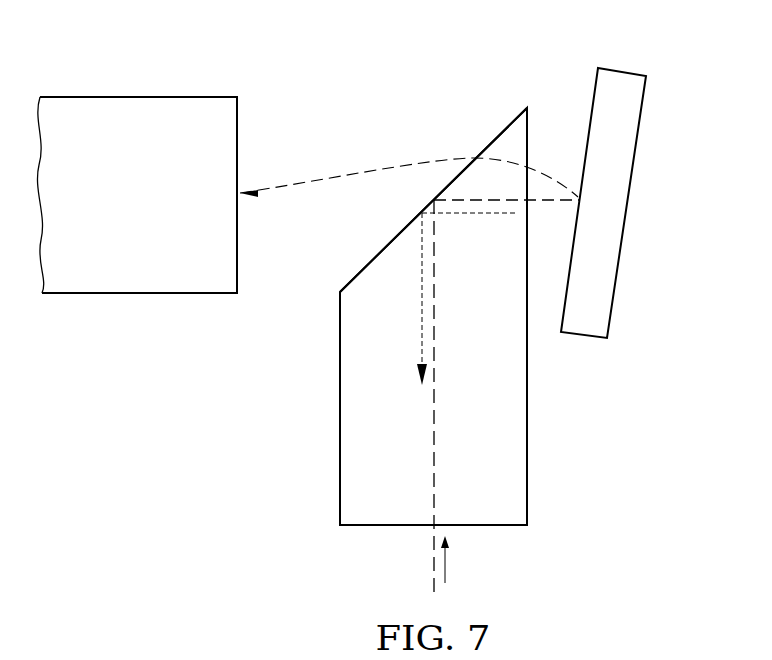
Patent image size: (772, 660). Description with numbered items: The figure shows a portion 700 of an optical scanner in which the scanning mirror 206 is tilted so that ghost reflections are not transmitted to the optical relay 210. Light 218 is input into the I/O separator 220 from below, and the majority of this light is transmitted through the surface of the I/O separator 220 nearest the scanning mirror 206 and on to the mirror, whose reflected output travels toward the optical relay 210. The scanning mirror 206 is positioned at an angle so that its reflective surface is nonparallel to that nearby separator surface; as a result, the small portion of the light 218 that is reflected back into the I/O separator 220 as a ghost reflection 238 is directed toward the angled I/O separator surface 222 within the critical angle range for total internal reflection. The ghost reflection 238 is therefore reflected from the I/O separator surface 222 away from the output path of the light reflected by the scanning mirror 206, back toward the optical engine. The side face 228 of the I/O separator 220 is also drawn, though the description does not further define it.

The portion of the optical scanner 700 is at (187, 71).
The optical relay 210 is at (116, 212).
The I/O separator 220 is at (341, 407).
The I/O separator surface 222 is at (494, 140).
The side surface of prism 228 is at (532, 437).
The scanning mirror 206 is at (632, 195).
The light 218 is at (433, 562).
The ghost reflection 238 is at (423, 324).